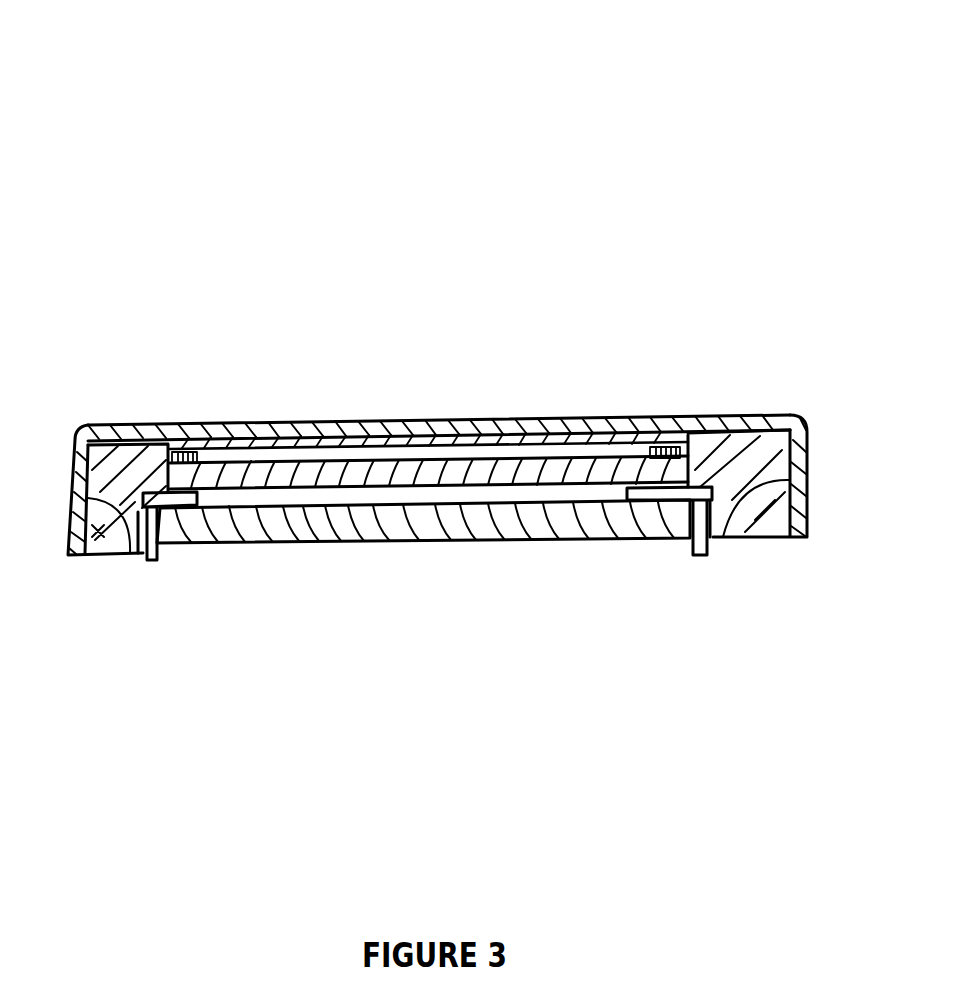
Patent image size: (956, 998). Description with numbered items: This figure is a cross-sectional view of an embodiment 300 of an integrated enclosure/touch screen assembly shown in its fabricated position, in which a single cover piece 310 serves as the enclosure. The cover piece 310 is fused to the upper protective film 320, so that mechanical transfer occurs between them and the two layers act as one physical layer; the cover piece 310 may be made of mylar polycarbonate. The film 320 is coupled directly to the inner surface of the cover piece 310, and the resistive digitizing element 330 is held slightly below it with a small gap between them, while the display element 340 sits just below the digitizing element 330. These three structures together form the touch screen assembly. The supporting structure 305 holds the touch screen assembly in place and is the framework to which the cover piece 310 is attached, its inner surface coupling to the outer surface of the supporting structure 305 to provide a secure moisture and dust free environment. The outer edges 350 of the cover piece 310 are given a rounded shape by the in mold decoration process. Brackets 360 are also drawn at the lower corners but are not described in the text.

The integrated enclosure/touch screen assembly embodiment 300 is at (93, 45).
The supporting structure 305 is at (107, 555).
The cover piece 310 is at (583, 417).
The upper protective film 320 is at (442, 440).
The digitizing element 330 is at (290, 478).
The display element 340 is at (443, 532).
The outer edges 350 is at (82, 433).
The mounting brackets 360 is at (127, 555).